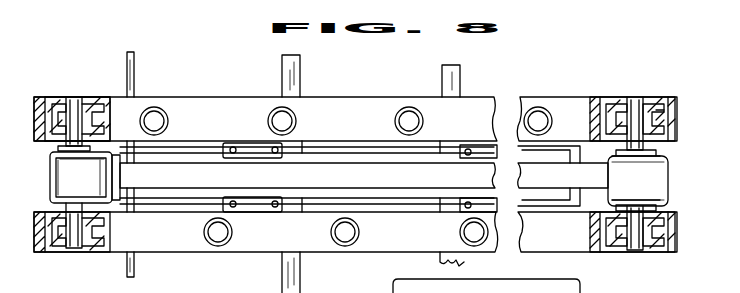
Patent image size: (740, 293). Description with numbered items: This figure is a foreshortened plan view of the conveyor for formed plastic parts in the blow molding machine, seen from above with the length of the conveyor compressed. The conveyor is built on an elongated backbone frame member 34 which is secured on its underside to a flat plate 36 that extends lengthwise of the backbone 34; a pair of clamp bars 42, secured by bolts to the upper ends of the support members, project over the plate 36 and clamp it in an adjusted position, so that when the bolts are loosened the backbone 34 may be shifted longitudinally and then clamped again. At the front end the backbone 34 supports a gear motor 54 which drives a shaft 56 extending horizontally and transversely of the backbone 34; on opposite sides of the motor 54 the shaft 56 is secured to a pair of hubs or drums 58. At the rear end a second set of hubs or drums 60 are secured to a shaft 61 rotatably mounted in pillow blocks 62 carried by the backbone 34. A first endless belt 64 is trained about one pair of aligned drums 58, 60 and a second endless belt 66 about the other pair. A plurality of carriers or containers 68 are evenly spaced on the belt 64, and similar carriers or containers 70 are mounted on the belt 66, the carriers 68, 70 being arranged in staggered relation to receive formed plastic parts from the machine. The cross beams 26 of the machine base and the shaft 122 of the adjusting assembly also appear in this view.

The cross beams 26 is at (300, 272).
The backbone frame member 34 is at (646, 178).
The flat plate 36 is at (346, 198).
The clamp bars 42 is at (245, 203).
The gear motor 54 is at (50, 178).
The shaft 56 is at (71, 97).
The hubs or drums 58 is at (43, 97).
The hubs or drums 60 is at (667, 100).
The shaft 61 is at (640, 252).
The pillow blocks 62 is at (660, 153).
The first endless belt 64 is at (672, 113).
The second endless belt 66 is at (675, 236).
The carriers or containers 68 is at (165, 107).
The carriers or containers 70 is at (222, 246).
The shaft 122 is at (134, 268).